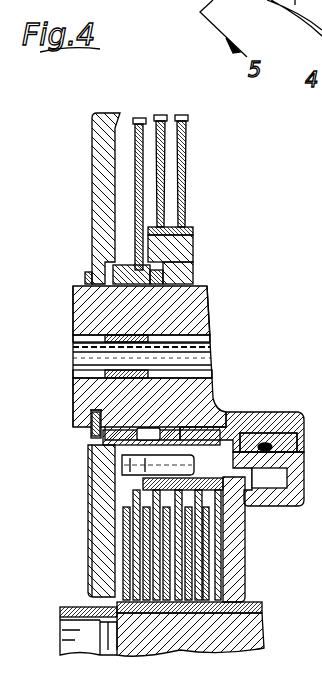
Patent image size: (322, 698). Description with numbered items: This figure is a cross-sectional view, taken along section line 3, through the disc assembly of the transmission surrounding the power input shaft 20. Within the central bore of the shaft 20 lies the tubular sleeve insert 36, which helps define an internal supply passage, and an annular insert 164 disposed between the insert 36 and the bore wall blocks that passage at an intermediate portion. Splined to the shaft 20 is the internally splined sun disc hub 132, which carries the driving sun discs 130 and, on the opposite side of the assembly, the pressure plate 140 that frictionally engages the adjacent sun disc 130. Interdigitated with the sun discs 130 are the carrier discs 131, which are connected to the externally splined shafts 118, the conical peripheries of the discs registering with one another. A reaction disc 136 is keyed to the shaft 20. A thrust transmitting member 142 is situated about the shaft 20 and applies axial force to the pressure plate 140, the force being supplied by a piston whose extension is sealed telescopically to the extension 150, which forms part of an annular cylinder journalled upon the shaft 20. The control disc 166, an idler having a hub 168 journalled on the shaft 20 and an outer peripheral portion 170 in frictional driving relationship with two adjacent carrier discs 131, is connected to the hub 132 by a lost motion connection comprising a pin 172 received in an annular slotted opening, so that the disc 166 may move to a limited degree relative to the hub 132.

The section line 3- 3 is at (128, 72).
The power input shaft 20 is at (72, 396).
The tubular sleeve insert 36 is at (76, 355).
The annular insert 164 is at (74, 380).
The hub 168 is at (90, 441).
The sun disc hub 132 is at (238, 410).
The extension 150 is at (294, 413).
The thrust transmitting member 142 is at (296, 504).
The pin 172 is at (122, 460).
The reaction disc 136 is at (108, 519).
The control disc 166 is at (146, 488).
The discs 131 is at (140, 534).
The driving sun discs 130 is at (178, 563).
The pressure plate 140 is at (245, 549).
The outer peripheral portion 170 is at (128, 592).
The shafts 118 is at (258, 622).